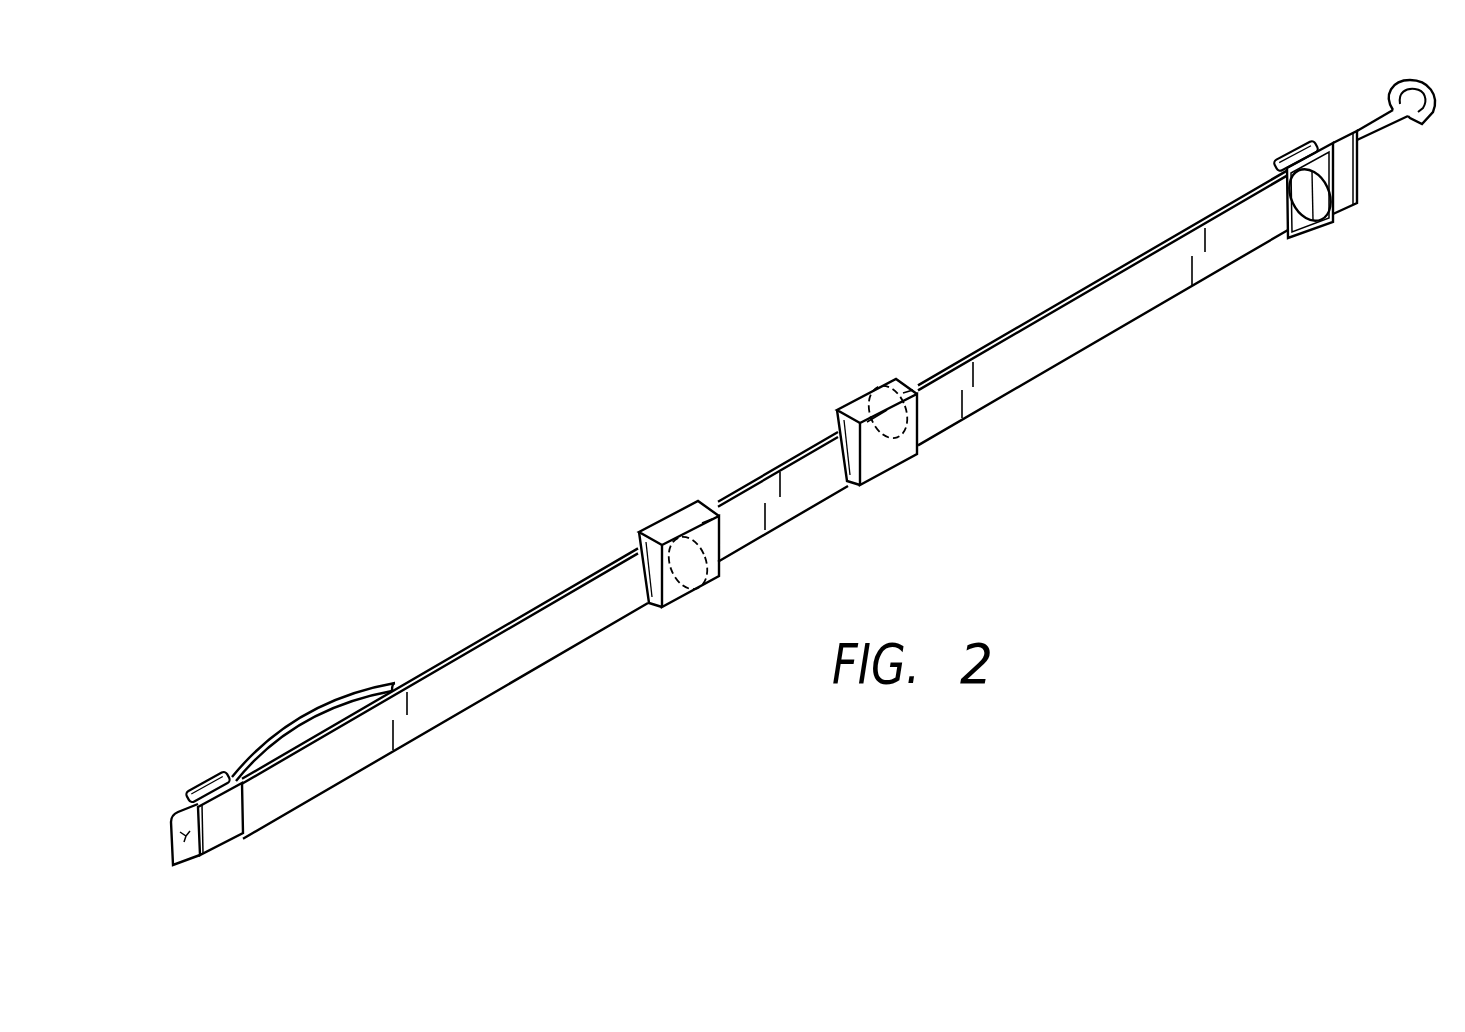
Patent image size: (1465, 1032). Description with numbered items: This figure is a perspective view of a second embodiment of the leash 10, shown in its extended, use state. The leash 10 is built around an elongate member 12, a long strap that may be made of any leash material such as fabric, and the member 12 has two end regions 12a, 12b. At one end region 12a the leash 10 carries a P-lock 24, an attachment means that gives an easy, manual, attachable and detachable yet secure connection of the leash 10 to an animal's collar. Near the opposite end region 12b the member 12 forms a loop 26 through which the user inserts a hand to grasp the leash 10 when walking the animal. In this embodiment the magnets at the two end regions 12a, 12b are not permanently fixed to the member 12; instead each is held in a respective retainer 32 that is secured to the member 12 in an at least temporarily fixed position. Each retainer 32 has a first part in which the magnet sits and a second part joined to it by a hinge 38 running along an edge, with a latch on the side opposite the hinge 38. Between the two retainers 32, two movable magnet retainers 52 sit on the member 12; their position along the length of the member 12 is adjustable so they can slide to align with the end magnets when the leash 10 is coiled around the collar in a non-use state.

The leash 10 is at (766, 478).
The elongate member 12 is at (1050, 305).
The end region of the member 12a is at (1342, 177).
The end region of the member 12b is at (173, 862).
The P-lock 24 is at (1392, 83).
The loop 26 is at (303, 717).
The retainer 32 is at (1315, 228).
The hinge 38 is at (1297, 153).
The movable magnet retainer 52 is at (873, 388).